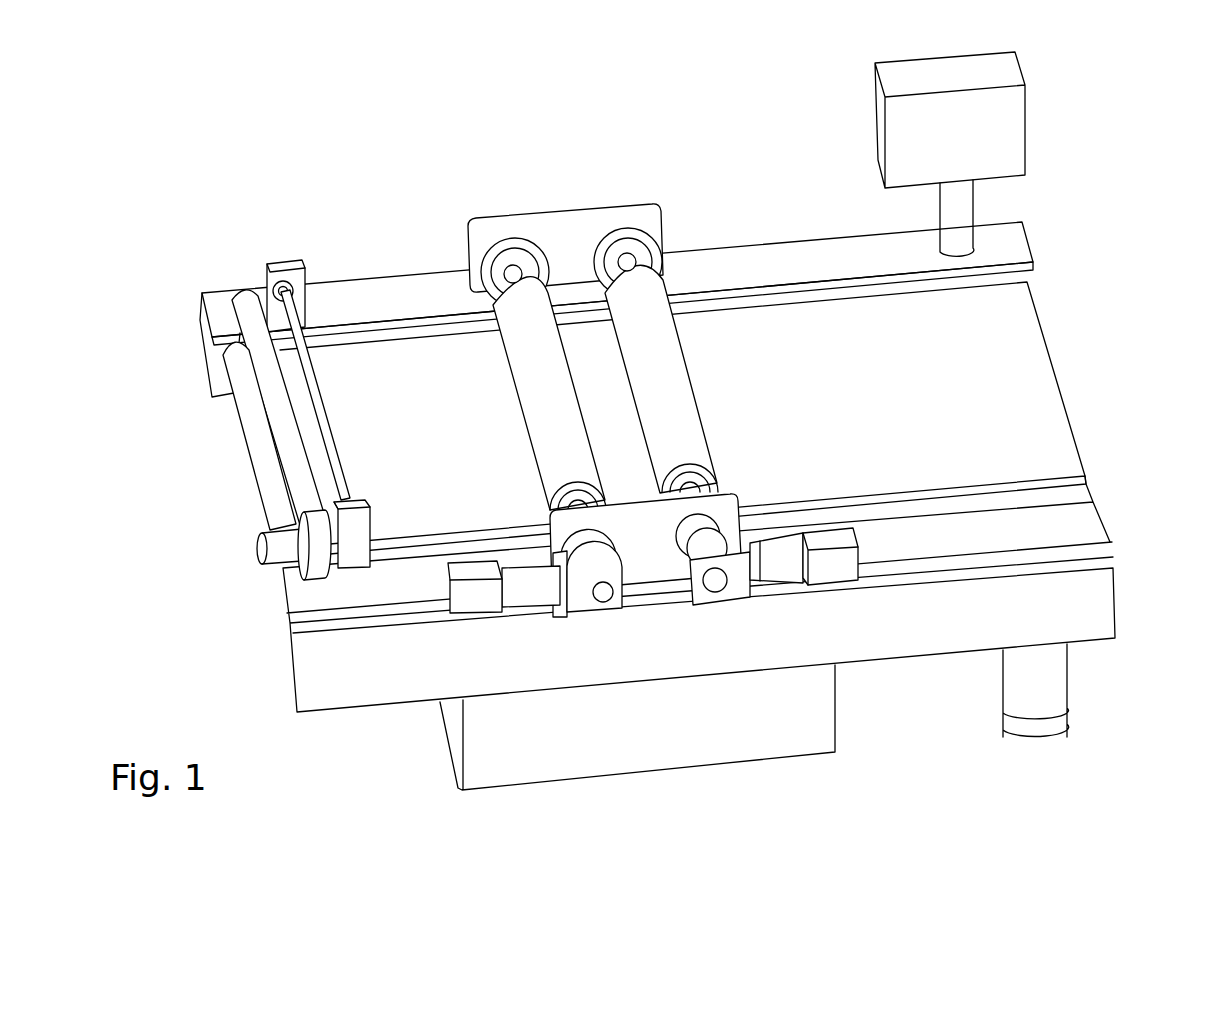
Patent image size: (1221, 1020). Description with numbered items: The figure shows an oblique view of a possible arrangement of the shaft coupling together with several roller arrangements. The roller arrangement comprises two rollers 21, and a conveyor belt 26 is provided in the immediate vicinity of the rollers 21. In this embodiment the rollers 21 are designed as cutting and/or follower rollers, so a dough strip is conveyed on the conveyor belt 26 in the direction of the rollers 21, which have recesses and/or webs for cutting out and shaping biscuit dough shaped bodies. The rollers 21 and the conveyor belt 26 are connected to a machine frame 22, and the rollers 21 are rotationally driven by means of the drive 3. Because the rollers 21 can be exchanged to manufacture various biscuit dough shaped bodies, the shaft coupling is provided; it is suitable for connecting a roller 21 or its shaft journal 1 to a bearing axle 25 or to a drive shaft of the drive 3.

The shaft journal 1 is at (623, 255).
The drive 3 is at (470, 595).
The roller 21 is at (533, 353).
The machine frame 22 is at (1063, 607).
The bearing axle 25 is at (503, 243).
The conveyor belt 26 is at (998, 363).